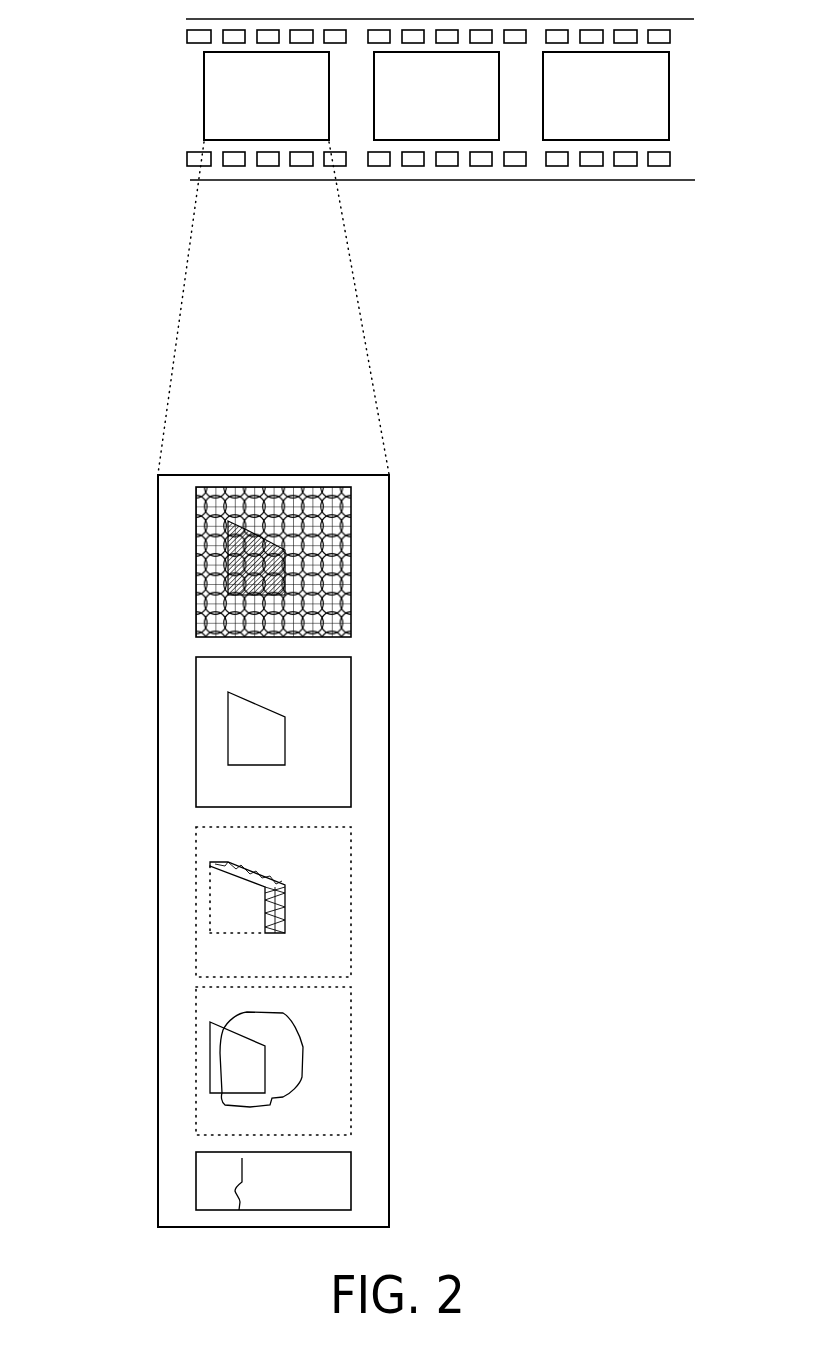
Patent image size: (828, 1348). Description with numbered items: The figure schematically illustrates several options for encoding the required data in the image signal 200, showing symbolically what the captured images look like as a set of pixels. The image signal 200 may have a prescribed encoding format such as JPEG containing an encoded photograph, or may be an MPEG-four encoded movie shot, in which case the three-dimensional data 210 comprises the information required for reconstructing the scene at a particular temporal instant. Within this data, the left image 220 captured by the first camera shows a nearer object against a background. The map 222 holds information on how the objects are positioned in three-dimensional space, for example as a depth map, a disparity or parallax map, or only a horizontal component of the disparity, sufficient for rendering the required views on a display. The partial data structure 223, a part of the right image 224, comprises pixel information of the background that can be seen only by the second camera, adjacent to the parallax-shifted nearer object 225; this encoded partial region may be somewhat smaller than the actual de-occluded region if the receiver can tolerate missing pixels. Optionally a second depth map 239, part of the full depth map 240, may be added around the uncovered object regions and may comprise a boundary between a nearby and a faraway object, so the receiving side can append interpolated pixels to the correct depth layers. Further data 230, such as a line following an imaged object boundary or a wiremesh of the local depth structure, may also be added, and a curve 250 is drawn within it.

The image signal 200 is at (170, 93).
The 3D data 210 is at (181, 562).
The left image 220 is at (351, 568).
The map 222 is at (351, 721).
The partial data structure 223 is at (272, 887).
The right image 224 is at (275, 902).
The parallax-shifted nearer object 225 is at (217, 912).
The second depth map 239 is at (222, 1103).
The full depth map 240 is at (275, 1064).
The further data 230 is at (323, 1181).
The curve 250 is at (243, 1182).